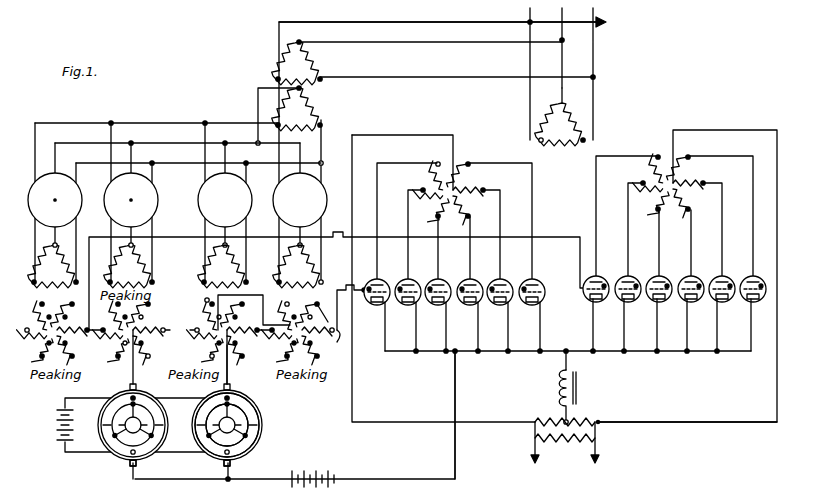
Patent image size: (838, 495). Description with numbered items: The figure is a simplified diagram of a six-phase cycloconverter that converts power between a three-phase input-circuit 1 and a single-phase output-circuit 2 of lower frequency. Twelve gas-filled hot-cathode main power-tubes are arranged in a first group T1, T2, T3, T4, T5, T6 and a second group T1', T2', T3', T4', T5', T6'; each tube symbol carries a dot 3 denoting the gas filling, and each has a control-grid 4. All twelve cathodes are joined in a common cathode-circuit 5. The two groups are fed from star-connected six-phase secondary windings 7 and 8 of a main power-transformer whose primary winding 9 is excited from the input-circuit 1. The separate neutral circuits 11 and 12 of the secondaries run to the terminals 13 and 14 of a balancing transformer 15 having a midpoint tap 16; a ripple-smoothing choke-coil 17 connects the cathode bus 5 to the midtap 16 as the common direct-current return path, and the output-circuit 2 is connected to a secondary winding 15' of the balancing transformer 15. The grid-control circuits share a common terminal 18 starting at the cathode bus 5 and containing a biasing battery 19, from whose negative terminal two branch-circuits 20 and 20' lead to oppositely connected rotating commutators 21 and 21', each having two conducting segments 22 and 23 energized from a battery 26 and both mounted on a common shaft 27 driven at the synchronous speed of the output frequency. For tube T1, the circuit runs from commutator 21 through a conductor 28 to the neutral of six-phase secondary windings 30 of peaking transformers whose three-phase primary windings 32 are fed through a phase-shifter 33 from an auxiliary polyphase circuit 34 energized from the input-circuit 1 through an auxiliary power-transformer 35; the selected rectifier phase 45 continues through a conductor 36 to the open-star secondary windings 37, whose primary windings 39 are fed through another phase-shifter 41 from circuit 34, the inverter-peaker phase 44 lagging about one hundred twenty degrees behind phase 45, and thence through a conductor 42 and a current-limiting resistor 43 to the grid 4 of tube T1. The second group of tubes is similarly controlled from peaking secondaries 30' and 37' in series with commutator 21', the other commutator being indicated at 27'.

The 3-phase input-circuit 1 is at (447, 22).
The single-phase output-circuit 2 is at (586, 457).
The tiny circle or dot 3 is at (372, 286).
The control-grid 4 is at (548, 288).
The cathode-circuit 5 is at (552, 353).
The star-connected 6-phase secondary winding 7 is at (487, 185).
The star-connected 6-phase secondary winding 8 is at (708, 178).
The primary winding 9 is at (565, 124).
The neutral circuit 11 is at (453, 139).
The neutral circuit 12 is at (673, 142).
The terminal of balancing transformer 13 is at (519, 414).
The terminal of balancing transformer 14 is at (613, 421).
The balancing transformer 15 is at (610, 431).
The secondary winding 15' is at (551, 442).
The midpoint tap 16 is at (564, 421).
The choke-coil 17 is at (563, 388).
The common terminal of grid-control circuits 18 is at (455, 459).
The biasing battery 19 is at (315, 474).
The branch-circuit 20 is at (242, 470).
The branch-circuit 20' is at (150, 470).
The rotating commutator 21 is at (256, 403).
The rotating commutator 21' is at (152, 391).
The conducting segment 22 is at (260, 419).
The conducting segment 23 is at (257, 446).
The battery 26 is at (56, 431).
The common shaft 27 is at (219, 425).
The phase shifter 27' is at (158, 425).
The conductor 28 is at (228, 374).
The 6-phase-connected secondary windings 30 is at (223, 333).
The peaking network 30' is at (134, 333).
The 3-phase-connected primary windings 32 is at (221, 266).
The phase-shifter 33 is at (225, 200).
The auxiliary input-frequency polyphase circuit 34 is at (167, 163).
The auxiliary power-transformer 35 is at (339, 103).
The conductor 36 is at (250, 298).
The open-star 6-phase-connected secondary windings 37 is at (298, 328).
The peaking-transformer secondary windings 37' is at (53, 333).
The 3-phase-connected primary windings 39 is at (296, 266).
The phase-shifter 41 is at (300, 200).
The conductor 42 is at (338, 344).
The current-limiting resistor 43 is at (346, 300).
The inverter-peaker phase 44 is at (327, 313).
The rectifier-peaker phase 45 is at (206, 306).
The main power-tube T1 is at (368, 311).
The main power-tube T2 is at (406, 315).
The main power-tube T3 is at (437, 315).
The main power-tube T4 is at (468, 315).
The main power-tube T5 is at (499, 315).
The main power-tube T6 is at (524, 311).
The main power-tube T1' is at (593, 313).
The main power-tube T2' is at (626, 313).
The main power-tube T3' is at (657, 313).
The main power-tube T4' is at (688, 313).
The main power-tube T5' is at (720, 313).
The main power-tube T6' is at (751, 313).